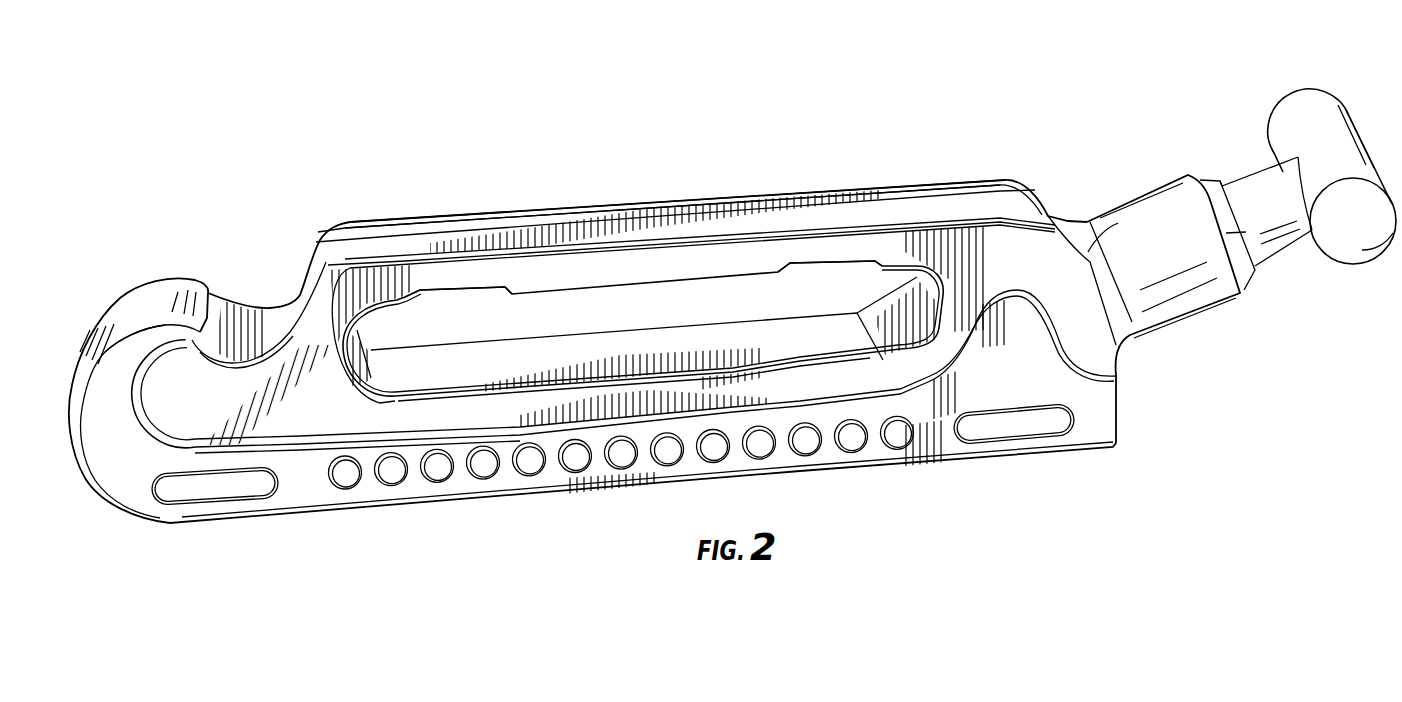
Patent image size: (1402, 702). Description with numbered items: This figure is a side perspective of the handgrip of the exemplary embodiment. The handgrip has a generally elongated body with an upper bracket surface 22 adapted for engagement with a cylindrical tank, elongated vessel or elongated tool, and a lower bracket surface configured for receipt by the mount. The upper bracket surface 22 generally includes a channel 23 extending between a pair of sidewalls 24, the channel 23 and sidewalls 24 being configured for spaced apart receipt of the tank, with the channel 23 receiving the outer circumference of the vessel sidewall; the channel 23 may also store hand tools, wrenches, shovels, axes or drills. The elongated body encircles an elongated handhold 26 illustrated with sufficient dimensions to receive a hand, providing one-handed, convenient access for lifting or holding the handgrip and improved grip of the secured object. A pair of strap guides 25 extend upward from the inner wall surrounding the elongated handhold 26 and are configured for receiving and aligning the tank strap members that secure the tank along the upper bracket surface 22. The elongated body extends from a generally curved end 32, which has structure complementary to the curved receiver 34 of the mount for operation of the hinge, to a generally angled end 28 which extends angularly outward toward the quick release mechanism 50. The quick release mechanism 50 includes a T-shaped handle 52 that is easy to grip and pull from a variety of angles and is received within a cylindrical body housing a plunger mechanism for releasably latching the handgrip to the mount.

The upper bracket surface 22 is at (684, 196).
The channel 23 is at (647, 222).
The sidewalls 24 is at (734, 206).
The strap guides 25 is at (450, 288).
The elongated handhold 26 is at (576, 314).
The angled end 28 is at (1116, 247).
The curved end 32 is at (198, 377).
The curved receiver 34 is at (128, 370).
The quick release mechanism 50 is at (1278, 96).
The T-shaped handle 52 is at (1358, 143).